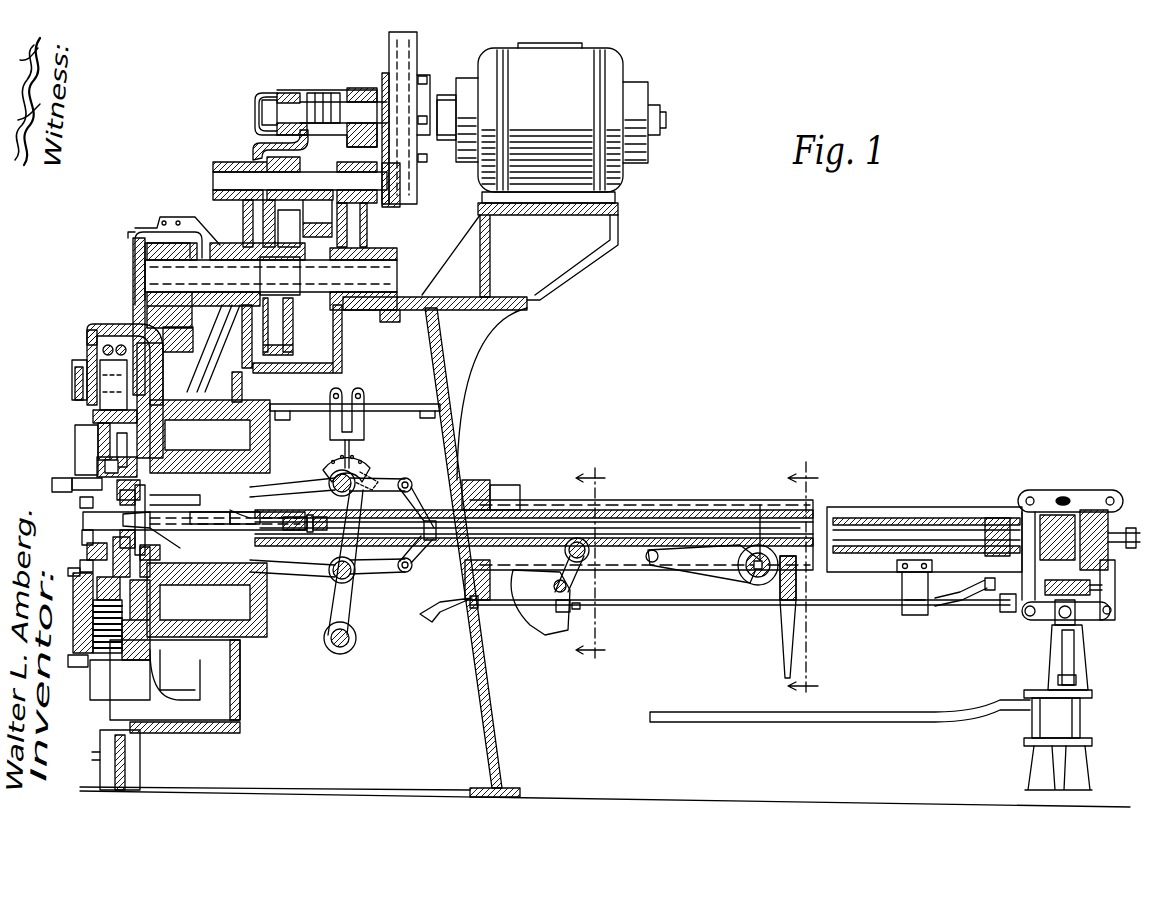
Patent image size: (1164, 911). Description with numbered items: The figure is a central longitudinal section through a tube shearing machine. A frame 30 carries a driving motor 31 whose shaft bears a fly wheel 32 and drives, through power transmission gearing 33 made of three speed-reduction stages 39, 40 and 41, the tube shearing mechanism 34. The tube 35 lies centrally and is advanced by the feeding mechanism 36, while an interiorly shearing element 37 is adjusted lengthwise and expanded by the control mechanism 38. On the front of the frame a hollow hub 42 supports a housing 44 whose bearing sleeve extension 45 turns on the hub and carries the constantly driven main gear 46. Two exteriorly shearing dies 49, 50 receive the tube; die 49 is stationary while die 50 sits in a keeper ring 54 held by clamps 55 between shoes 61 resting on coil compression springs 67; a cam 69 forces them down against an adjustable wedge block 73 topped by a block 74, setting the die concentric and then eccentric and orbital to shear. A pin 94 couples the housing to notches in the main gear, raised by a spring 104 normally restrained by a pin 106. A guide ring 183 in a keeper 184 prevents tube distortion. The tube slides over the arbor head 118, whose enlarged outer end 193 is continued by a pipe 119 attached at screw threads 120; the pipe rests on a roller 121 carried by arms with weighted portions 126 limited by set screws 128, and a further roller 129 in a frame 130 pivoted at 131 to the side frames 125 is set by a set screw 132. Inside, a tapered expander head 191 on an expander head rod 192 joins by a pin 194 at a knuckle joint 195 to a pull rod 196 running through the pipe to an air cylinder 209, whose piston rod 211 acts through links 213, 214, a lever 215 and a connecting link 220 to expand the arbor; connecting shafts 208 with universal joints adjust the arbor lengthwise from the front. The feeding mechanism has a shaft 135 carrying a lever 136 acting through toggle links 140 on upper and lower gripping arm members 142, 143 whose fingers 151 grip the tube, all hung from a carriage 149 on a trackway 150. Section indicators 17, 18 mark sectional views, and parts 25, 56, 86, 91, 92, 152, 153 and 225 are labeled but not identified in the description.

The section line 17 is at (581, 562).
The section line 18 is at (793, 580).
The bearing member 25 is at (96, 345).
The frame 30 is at (452, 383).
The driving motor 31 is at (625, 68).
The fly wheel 32 is at (417, 55).
The power transmission gearing 33 is at (298, 101).
The tube shearing mechanism 34 is at (68, 345).
The tube 35 is at (503, 506).
The tube feeding mechanism 36 is at (368, 474).
The interiorly shearing element 37 is at (100, 515).
The arbor control mechanism 38 is at (899, 622).
The first speed-reduction gearing stage 39 is at (286, 106).
The second speed-reduction gearing stage 40 is at (262, 203).
The third speed-reduction gearing stage 41 is at (150, 303).
The hollow hub 42 is at (184, 486).
The housing 44 is at (120, 340).
The bearing sleeve extension 45 is at (265, 592).
The main gear 46 is at (183, 320).
The exteriorly shearing die 49 is at (180, 497).
The exteriorly shearing die 50 is at (55, 485).
The keeper ring 54 is at (77, 436).
The clamps 55 is at (95, 481).
The bushing 56 is at (152, 547).
The shoes 61 is at (100, 608).
The coil compression springs 67 is at (98, 662).
The cam 69 is at (88, 395).
The adjustable wedge block 73 is at (95, 367).
The block 74 is at (100, 357).
The ball bearing 86 is at (114, 345).
The lever 91 is at (187, 392).
The block 92 is at (200, 397).
The pin 94 is at (180, 655).
The spring 104 is at (80, 499).
The pin 106 is at (137, 748).
The arbor head 118 is at (192, 528).
The pipe 119 is at (672, 512).
The screw threads 120 is at (212, 535).
The pipe supporting roller 121 is at (590, 550).
The side frames 125 is at (768, 510).
The weighted portions 126 is at (532, 622).
The set screws 128 is at (572, 614).
The additional roller 129 is at (756, 574).
The roller frame 130 is at (695, 560).
The pivot 131 is at (652, 562).
The set screw 132 is at (786, 612).
The rotatable shaft 135 is at (336, 654).
The lever 136 is at (332, 608).
The toggle links 140 is at (425, 474).
The upper gripping arm member 142 is at (305, 485).
The lower gripping arm member 143 is at (300, 580).
The carriage 149 is at (362, 405).
The trackway 150 is at (300, 409).
The gripping fingers 151 is at (218, 506).
The sector 152 is at (365, 465).
The link 153 is at (352, 444).
The guide ring 183 is at (80, 560).
The keeper 184 is at (72, 572).
The expander head 191 is at (82, 533).
The expander head rod 192 is at (210, 500).
The outer end of arbor head 193 is at (150, 530).
The pin 194 is at (83, 417).
The knuckle joint 195 is at (310, 532).
The pull rod 196 is at (437, 538).
The connecting shafts 208 is at (422, 616).
The air cylinder 209 is at (1082, 708).
The piston rod 211 is at (1090, 657).
The connecting link 213 is at (1085, 622).
The connecting link 214 is at (1040, 620).
The lever 215 is at (938, 612).
The connecting link 220 is at (1050, 490).
The link 225 is at (1112, 598).